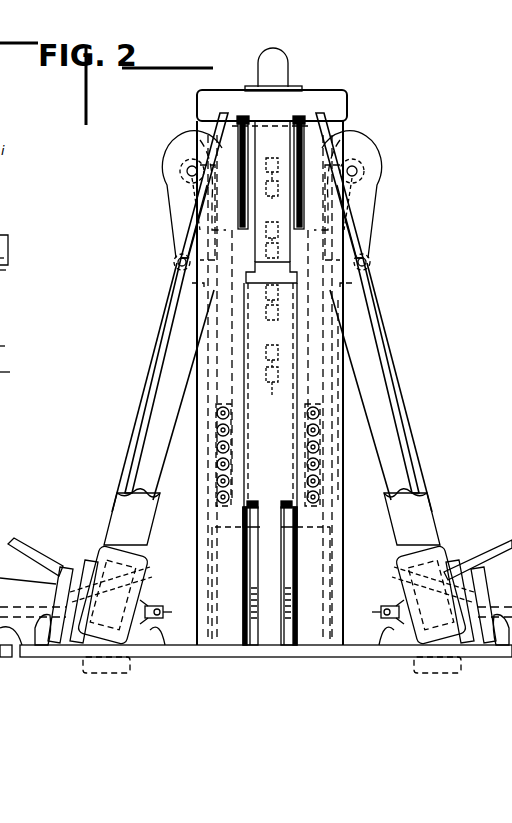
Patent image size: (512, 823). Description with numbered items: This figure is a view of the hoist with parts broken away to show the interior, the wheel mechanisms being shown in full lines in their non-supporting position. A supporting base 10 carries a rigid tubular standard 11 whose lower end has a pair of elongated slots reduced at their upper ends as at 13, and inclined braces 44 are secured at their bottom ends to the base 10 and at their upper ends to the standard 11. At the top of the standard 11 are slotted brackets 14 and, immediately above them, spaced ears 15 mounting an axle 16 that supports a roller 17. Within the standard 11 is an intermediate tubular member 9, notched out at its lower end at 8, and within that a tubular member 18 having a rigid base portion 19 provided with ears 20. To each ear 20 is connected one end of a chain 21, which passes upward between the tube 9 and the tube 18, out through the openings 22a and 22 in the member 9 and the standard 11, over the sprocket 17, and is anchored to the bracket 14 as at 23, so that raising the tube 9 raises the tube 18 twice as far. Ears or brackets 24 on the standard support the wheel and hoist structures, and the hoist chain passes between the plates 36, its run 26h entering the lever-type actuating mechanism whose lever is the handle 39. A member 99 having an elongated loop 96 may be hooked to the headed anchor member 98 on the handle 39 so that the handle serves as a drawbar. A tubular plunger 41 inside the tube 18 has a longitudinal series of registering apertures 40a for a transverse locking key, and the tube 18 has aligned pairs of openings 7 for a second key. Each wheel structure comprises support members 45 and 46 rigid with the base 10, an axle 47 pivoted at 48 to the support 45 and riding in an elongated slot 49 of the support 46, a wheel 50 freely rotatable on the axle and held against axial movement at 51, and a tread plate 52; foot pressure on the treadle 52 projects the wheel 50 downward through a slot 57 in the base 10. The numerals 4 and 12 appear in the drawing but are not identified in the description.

The lever arm 4 is at (28, 576).
The openings 7 is at (276, 308).
The notches 8 is at (270, 527).
The tubular member 9 is at (212, 600).
The supporting base 10 is at (190, 657).
The tubular standard 11 is at (197, 515).
The support post 12 is at (297, 560).
The reduced slot portions 13 is at (282, 268).
The slotted brackets 14 is at (178, 249).
The spaced ears 15 is at (176, 176).
The axle 16 is at (187, 171).
The roller 17 is at (187, 185).
The tubular member 18 is at (303, 407).
The base portion 19 is at (325, 515).
The ears 20 is at (217, 492).
The chain 21 is at (220, 463).
The slot 22 is at (184, 233).
The slot 22a is at (343, 207).
The chain anchorage 23 is at (176, 265).
The ears or brackets 24 is at (240, 123).
The plates 36 is at (285, 573).
The lever 39 is at (3, 234).
The registering apertures 40a is at (272, 158).
The plunger 41 is at (293, 380).
The inclined braces 44 is at (148, 399).
The support member 45 is at (158, 657).
The support member 46 is at (62, 650).
The axle 47 is at (72, 568).
The pivot 48 is at (160, 606).
The elongated slot 49 is at (40, 625).
The wheel 50 is at (128, 552).
The securing means 51 is at (88, 560).
The tread plate 52 is at (28, 540).
The slot 57 is at (146, 656).
The elongated loop 96 is at (5, 272).
The headed anchor member 98 is at (8, 256).
The drawbar member 99 is at (10, 372).
The chain run 26h is at (19, 349).